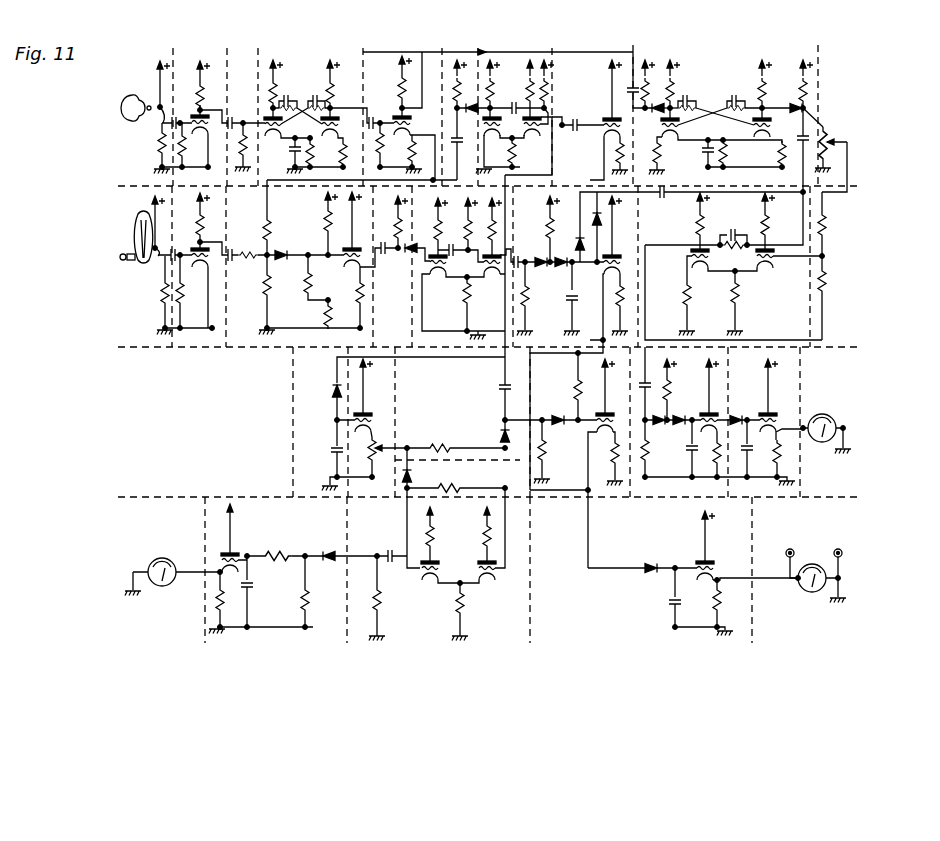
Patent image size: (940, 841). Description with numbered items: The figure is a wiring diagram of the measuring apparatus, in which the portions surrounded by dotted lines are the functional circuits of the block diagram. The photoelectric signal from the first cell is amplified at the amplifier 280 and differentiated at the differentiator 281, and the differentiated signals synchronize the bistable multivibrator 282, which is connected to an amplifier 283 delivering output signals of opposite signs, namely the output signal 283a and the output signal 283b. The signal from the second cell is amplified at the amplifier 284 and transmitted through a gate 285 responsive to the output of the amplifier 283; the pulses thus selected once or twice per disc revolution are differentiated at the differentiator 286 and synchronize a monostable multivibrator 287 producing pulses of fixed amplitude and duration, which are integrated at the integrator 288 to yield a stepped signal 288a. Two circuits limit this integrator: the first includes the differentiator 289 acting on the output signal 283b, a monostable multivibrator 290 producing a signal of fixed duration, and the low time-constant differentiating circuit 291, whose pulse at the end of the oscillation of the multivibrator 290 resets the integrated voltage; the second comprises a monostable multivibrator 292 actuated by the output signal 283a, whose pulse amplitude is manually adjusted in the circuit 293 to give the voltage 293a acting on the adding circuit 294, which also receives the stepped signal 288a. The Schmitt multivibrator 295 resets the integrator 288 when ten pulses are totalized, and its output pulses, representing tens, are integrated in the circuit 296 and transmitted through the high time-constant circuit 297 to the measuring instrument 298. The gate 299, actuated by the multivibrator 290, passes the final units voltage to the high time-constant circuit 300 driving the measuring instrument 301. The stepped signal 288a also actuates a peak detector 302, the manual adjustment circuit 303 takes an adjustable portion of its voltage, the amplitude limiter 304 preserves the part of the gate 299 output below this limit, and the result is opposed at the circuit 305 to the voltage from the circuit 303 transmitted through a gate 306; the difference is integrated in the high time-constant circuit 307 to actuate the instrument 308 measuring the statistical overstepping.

The amplifier 280 is at (182, 98).
The differentiator 281 is at (246, 120).
The bistable multivibrator 282 is at (305, 117).
The amplifier 283 is at (382, 118).
The output signal 283a is at (422, 62).
The output signal 283b is at (267, 196).
The amplifier 284 is at (174, 260).
The gate 285 is at (313, 263).
The differentiator 286 is at (404, 258).
The monostable multivibrator 287 is at (473, 269).
The integrator 288 is at (658, 264).
The stepped signal 288a is at (553, 353).
The differentiator 289 is at (457, 64).
The monostable multivibrator 290 is at (515, 207).
The low time-constant differentiating circuit 291 is at (602, 116).
The monostable multivibrator 292 is at (727, 126).
The manual adjustment circuit 293 is at (830, 136).
The adjusted voltage 293a is at (848, 176).
The adding circuit 294 is at (843, 266).
The Schmitt multivibrator 295 is at (733, 266).
The integrating circuit 296 is at (708, 413).
The high time-constant circuit 297 is at (759, 422).
The measuring instrument 298 is at (826, 420).
The gate 299 is at (576, 460).
The high time-constant circuit 300 is at (693, 573).
The measuring instrument 301 is at (816, 571).
The peak detector 302 is at (401, 424).
The manual adjustment circuit 303 is at (422, 419).
The amplitude limiter 304 is at (455, 470).
The opposing circuit 305 is at (420, 564).
The gate 306 is at (485, 399).
The high time-constant circuit 307 is at (272, 569).
The measuring instrument 308 is at (172, 563).